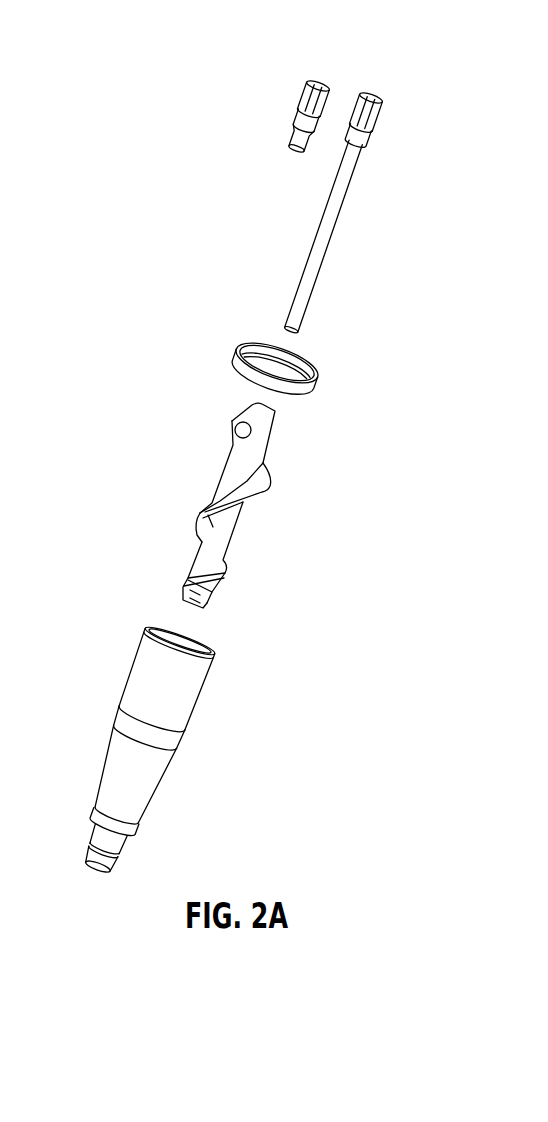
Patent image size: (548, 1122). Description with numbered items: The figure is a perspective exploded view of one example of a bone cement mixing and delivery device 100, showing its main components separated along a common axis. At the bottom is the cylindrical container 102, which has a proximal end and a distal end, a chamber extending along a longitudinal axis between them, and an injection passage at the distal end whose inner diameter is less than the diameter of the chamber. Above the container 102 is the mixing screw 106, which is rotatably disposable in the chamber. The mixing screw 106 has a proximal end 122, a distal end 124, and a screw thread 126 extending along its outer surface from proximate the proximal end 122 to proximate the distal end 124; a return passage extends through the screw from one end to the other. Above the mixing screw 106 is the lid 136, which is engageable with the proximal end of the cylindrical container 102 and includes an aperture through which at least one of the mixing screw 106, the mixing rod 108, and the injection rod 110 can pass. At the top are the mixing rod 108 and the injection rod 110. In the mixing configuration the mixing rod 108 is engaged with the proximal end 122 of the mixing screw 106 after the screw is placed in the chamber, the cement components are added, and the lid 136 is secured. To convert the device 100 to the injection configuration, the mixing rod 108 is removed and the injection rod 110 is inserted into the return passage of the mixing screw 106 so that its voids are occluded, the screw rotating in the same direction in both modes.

The bone cement mixing and delivery device 100 is at (225, 35).
The cylindrical container 102 is at (106, 681).
The mixing screw 106 is at (176, 498).
The mixing rod 108 is at (283, 96).
The injection rod 110 is at (355, 205).
The proximal end 122 is at (279, 447).
The distal end 124 is at (222, 596).
The screw thread 126 is at (279, 488).
The lid 136 is at (325, 381).